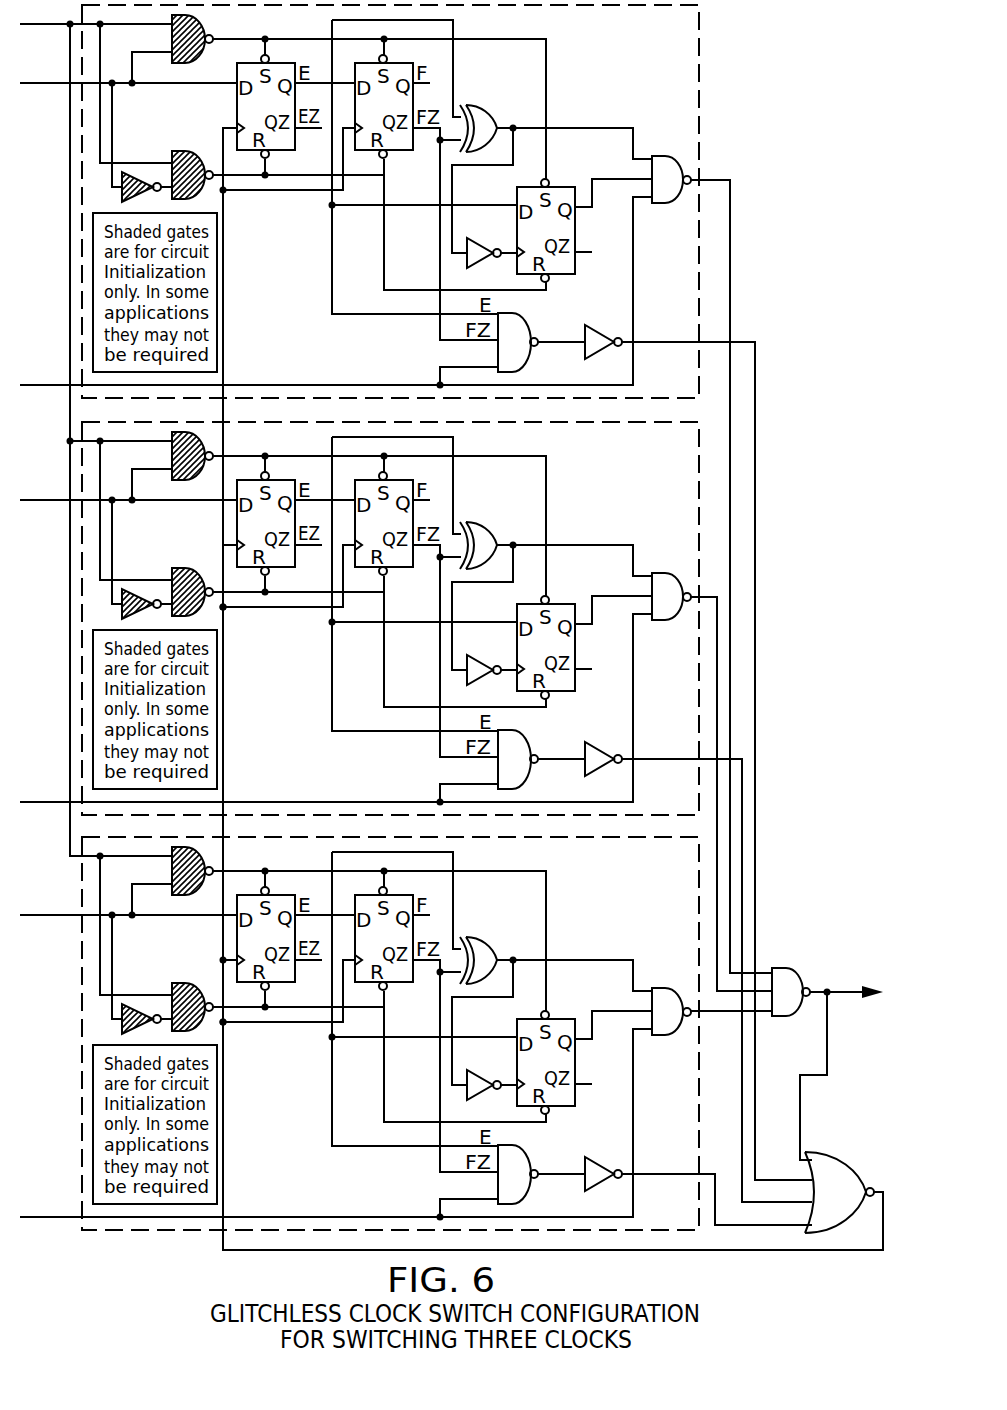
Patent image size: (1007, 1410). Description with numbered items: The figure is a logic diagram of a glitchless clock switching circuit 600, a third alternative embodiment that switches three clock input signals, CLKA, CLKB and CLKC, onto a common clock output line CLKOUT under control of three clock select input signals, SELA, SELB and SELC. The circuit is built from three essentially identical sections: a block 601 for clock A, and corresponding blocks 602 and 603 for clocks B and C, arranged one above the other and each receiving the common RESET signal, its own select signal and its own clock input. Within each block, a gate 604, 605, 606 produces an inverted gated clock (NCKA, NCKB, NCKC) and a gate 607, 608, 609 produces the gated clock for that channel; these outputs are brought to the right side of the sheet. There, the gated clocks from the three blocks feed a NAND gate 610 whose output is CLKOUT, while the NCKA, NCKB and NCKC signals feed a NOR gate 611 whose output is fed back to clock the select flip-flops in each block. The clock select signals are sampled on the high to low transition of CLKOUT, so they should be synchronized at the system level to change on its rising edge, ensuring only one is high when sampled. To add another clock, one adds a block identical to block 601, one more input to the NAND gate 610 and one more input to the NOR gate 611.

The glitchless clock switching circuit 600 is at (838, 53).
The block 601 is at (685, 65).
The clock B switching circuit 602 is at (685, 482).
The clock C switching circuit 603 is at (685, 897).
The clock A gating NAND gate and inverter (NCKA) 604 is at (598, 326).
The clock B gating NAND gate and inverter (NCKB) 605 is at (598, 743).
The clock C gating NAND gate and inverter (NCKC) 606 is at (598, 1158).
The three-input NAND gate for clock A 607 is at (665, 156).
The three-input NAND gate for clock B 608 is at (665, 573).
The three-input NAND gate for clock C 609 is at (665, 988).
The NAND gate 610 is at (790, 967).
The NOR gate 611 is at (842, 1172).